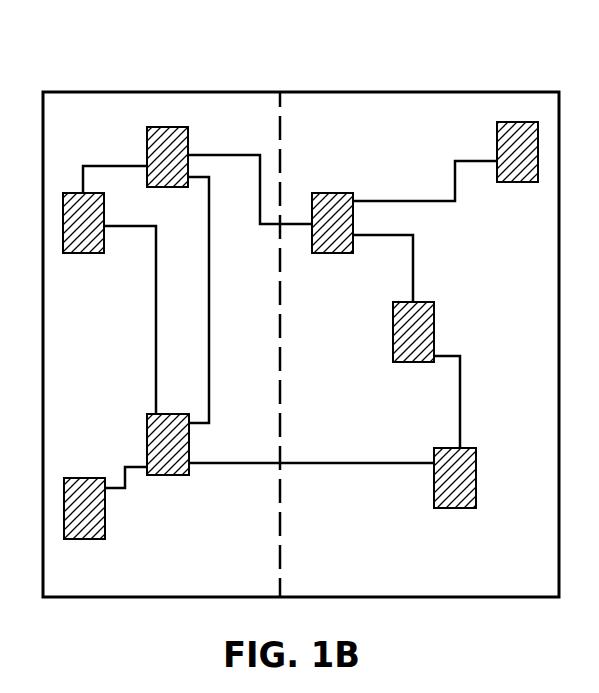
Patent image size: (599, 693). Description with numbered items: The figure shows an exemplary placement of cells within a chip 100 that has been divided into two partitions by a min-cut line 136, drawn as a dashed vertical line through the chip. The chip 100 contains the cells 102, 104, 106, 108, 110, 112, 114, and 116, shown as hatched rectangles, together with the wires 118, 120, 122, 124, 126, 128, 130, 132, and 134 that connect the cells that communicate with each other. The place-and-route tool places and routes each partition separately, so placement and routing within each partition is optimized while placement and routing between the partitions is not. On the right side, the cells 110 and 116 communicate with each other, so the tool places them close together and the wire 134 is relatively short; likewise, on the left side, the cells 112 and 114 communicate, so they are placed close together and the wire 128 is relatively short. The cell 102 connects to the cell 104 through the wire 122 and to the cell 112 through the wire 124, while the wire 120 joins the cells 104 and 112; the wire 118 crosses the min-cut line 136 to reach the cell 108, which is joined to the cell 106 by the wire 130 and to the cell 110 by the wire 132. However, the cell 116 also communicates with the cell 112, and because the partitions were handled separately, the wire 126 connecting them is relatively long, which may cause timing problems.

The chip 100 is at (43, 92).
The cell 102 is at (167, 143).
The cell 104 is at (83, 240).
The cell 106 is at (517, 169).
The cell 108 is at (332, 240).
The cell 110 is at (413, 346).
The cell 112 is at (168, 459).
The cell 114 is at (84, 524).
The cell 116 is at (455, 493).
The wire 118 is at (250, 177).
The wire 120 is at (130, 320).
The wire 122 is at (115, 162).
The wire 124 is at (223, 300).
The wire 126 is at (311, 479).
The wire 128 is at (123, 461).
The wire 130 is at (425, 181).
The wire 132 is at (405, 268).
The wire 134 is at (469, 402).
The min-cut line 136 is at (280, 117).